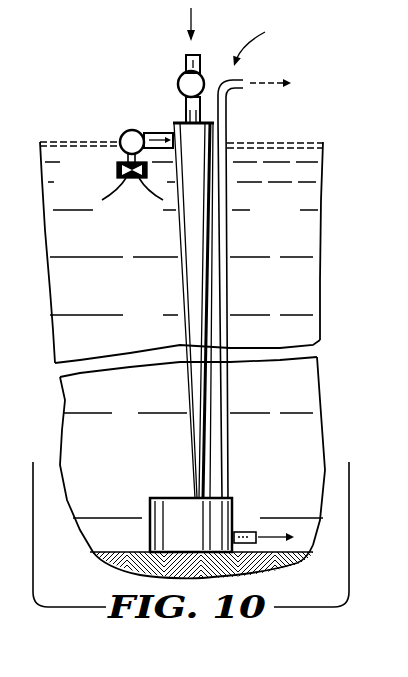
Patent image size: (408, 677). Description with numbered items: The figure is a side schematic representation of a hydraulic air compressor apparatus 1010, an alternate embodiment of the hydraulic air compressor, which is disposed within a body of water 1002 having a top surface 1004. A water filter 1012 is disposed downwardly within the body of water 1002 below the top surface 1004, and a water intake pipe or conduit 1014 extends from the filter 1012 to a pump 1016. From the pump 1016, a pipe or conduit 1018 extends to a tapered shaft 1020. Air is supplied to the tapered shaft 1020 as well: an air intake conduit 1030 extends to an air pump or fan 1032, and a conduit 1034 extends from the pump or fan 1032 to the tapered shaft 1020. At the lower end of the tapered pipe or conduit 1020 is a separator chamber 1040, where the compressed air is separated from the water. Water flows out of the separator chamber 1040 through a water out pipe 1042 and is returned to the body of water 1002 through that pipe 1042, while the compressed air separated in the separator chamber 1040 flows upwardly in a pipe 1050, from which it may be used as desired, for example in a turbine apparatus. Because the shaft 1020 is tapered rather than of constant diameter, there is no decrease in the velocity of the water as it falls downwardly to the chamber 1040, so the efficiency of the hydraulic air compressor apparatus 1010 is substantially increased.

The body of water 1002 is at (259, 150).
The top surface 1004 is at (311, 143).
The hydraulic air compressor apparatus 1010 is at (270, 43).
The water filter 1012 is at (116, 176).
The water intake pipe or conduit 1014 is at (122, 158).
The pump 1016 is at (120, 136).
The pipe or conduit 1018 is at (148, 130).
The tapered shaft 1020 is at (174, 221).
The air intake conduit 1030 is at (186, 62).
The air pump or fan 1032 is at (179, 80).
The conduit 1034 is at (186, 108).
The separator chamber 1040 is at (150, 498).
The water out pipe 1042 is at (256, 535).
The pipe 1050 is at (228, 214).